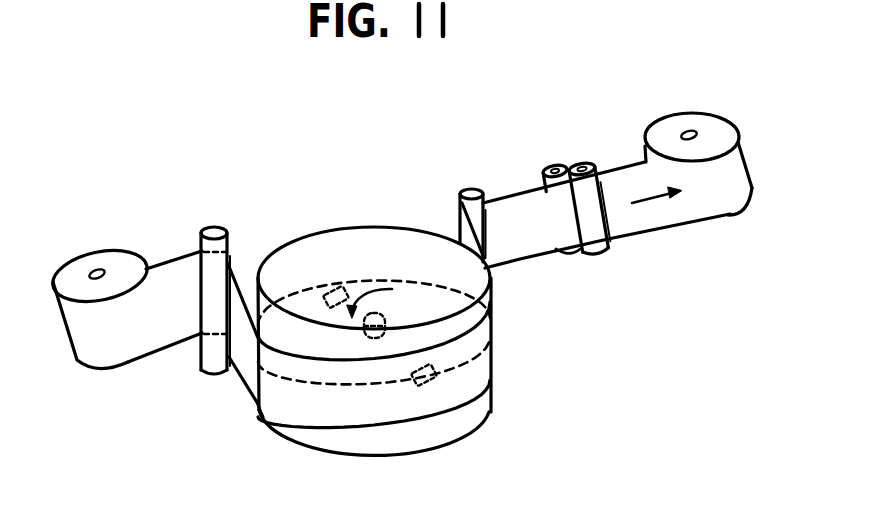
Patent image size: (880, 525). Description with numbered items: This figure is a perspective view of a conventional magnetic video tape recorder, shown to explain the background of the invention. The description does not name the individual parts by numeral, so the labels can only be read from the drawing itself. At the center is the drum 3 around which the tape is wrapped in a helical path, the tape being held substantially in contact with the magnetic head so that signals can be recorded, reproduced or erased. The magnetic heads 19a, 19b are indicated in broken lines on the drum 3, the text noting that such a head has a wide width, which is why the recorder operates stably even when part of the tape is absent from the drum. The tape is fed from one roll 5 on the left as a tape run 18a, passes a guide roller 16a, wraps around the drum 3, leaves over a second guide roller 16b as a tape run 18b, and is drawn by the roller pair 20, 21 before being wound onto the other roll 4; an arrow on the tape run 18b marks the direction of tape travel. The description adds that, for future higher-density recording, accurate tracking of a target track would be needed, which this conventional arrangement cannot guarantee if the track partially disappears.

The rotary drum 3 is at (405, 250).
The take-up roll 4 is at (697, 123).
The supply roll 5 is at (121, 260).
The guide roller 16a is at (212, 228).
The guide roller 16b is at (475, 190).
The tape (supply side) 18a is at (158, 337).
The tape (take-up side) 18b is at (550, 243).
The detection mark 19a is at (330, 286).
The detection mark 19b is at (428, 386).
The pinch roller 20 is at (596, 253).
The capstan roller 21 is at (587, 104).